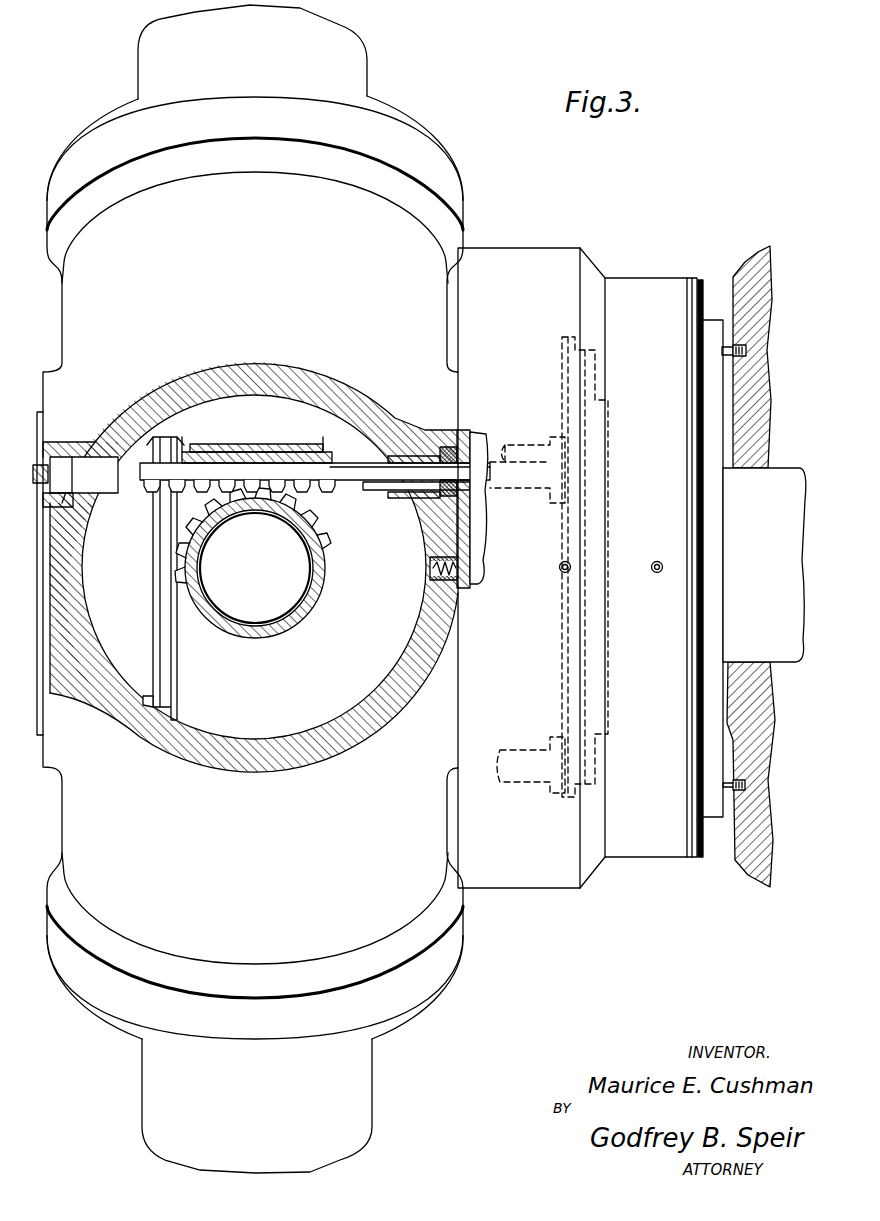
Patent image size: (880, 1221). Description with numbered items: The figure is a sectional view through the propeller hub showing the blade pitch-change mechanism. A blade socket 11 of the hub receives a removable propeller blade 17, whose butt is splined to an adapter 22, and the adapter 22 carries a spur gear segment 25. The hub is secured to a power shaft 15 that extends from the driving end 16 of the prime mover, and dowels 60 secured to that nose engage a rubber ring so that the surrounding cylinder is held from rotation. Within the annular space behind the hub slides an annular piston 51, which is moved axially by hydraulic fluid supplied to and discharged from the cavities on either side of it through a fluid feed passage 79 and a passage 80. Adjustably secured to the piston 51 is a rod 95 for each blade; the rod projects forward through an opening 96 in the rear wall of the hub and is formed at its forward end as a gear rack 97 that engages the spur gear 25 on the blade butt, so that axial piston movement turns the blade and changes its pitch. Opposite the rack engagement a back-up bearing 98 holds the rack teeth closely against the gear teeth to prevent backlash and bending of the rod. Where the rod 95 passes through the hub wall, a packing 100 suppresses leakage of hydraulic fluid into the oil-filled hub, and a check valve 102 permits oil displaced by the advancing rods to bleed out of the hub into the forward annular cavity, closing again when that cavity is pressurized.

The blade socket 11 is at (440, 178).
The propeller blade 17 is at (358, 72).
The power shaft 15 is at (780, 482).
The driving end of prime mover 16 is at (758, 388).
The adapter 22 is at (312, 613).
The spur gear segment 25 is at (332, 536).
The annular piston 51 is at (590, 382).
The dowel 60 is at (747, 344).
The fluid feed passage 79 is at (563, 575).
The passage 80 is at (657, 574).
The rod 95 is at (477, 488).
The opening in rear wall of propeller hub 96 is at (423, 430).
The gear rack 97 is at (328, 490).
The back-up bearing 98 is at (260, 452).
The packing 100 is at (462, 430).
The check valve 102 is at (430, 570).